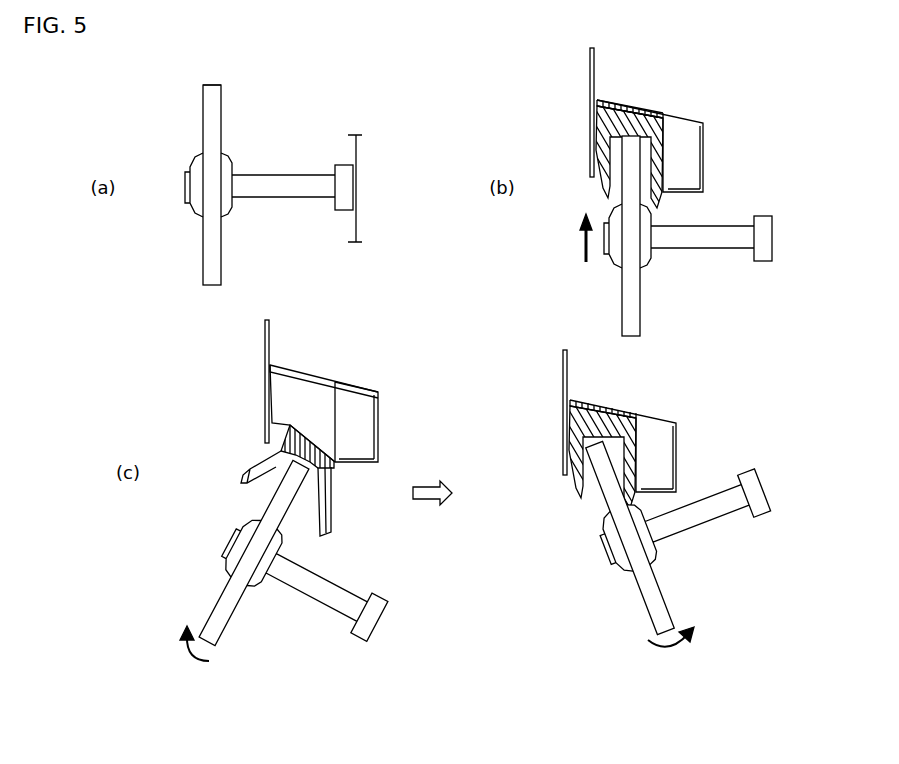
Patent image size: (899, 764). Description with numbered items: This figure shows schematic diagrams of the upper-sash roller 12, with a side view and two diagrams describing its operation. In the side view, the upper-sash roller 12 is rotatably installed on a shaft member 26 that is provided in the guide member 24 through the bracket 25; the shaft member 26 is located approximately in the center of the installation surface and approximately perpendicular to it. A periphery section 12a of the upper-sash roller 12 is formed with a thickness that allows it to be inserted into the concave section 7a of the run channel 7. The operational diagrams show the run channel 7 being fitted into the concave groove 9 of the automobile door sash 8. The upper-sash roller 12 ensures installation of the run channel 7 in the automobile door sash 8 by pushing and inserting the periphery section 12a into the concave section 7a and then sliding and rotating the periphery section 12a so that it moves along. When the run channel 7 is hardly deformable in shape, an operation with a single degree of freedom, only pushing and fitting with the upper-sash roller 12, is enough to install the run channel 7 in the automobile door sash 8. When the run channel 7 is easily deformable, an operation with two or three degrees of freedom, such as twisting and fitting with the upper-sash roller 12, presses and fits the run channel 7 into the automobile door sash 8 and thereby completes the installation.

The run channel 7 is at (643, 120).
The concave section of the run channel 7a is at (625, 103).
The automobile door sash 8 is at (592, 112).
The concave groove 9 is at (303, 382).
The upper-sash roller 12 is at (215, 147).
The periphery section of the upper-sash roller 12a is at (218, 90).
The guide member 24 is at (352, 222).
The bracket 25 is at (338, 165).
The shaft member 26 is at (247, 180).